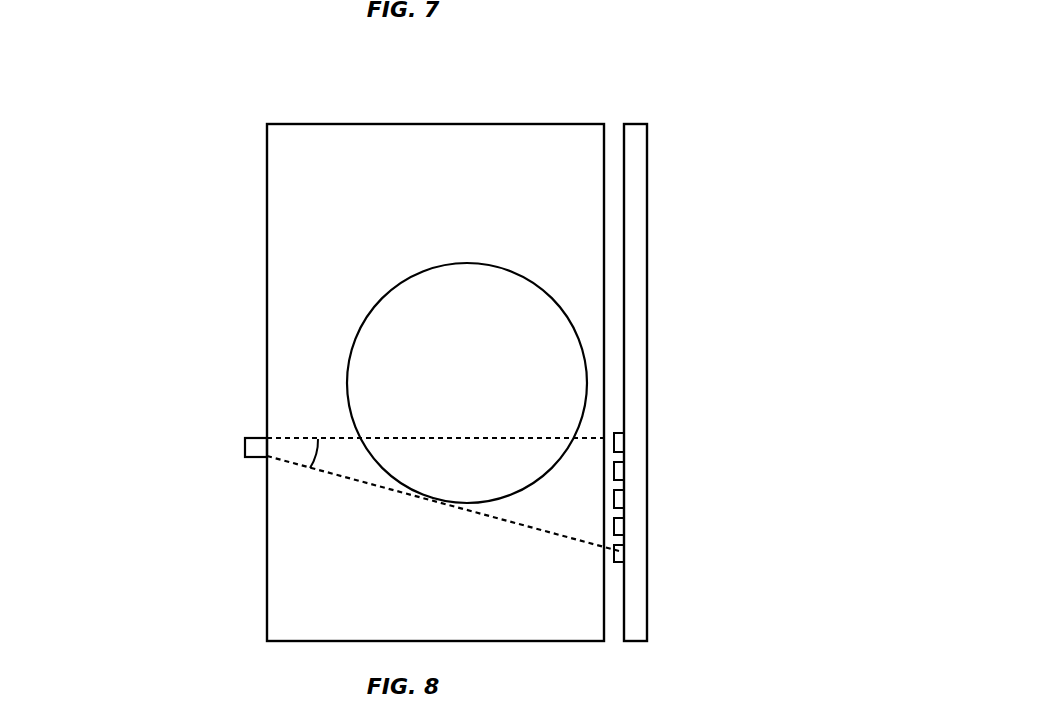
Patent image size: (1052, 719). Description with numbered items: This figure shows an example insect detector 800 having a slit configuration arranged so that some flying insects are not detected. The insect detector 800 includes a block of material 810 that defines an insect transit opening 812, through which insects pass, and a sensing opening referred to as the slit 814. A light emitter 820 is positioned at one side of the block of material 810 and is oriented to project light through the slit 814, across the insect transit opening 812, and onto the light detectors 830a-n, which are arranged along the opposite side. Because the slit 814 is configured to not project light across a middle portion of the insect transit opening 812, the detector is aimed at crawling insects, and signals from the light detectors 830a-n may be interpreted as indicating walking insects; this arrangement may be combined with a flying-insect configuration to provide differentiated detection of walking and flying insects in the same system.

The insect detector 800 is at (192, 101).
The block of material 810 is at (267, 252).
The insect transit opening 812 is at (467, 383).
The slit 814 is at (470, 513).
The light emitter 820 is at (245, 448).
The light detectors 830a-n is at (612, 82).